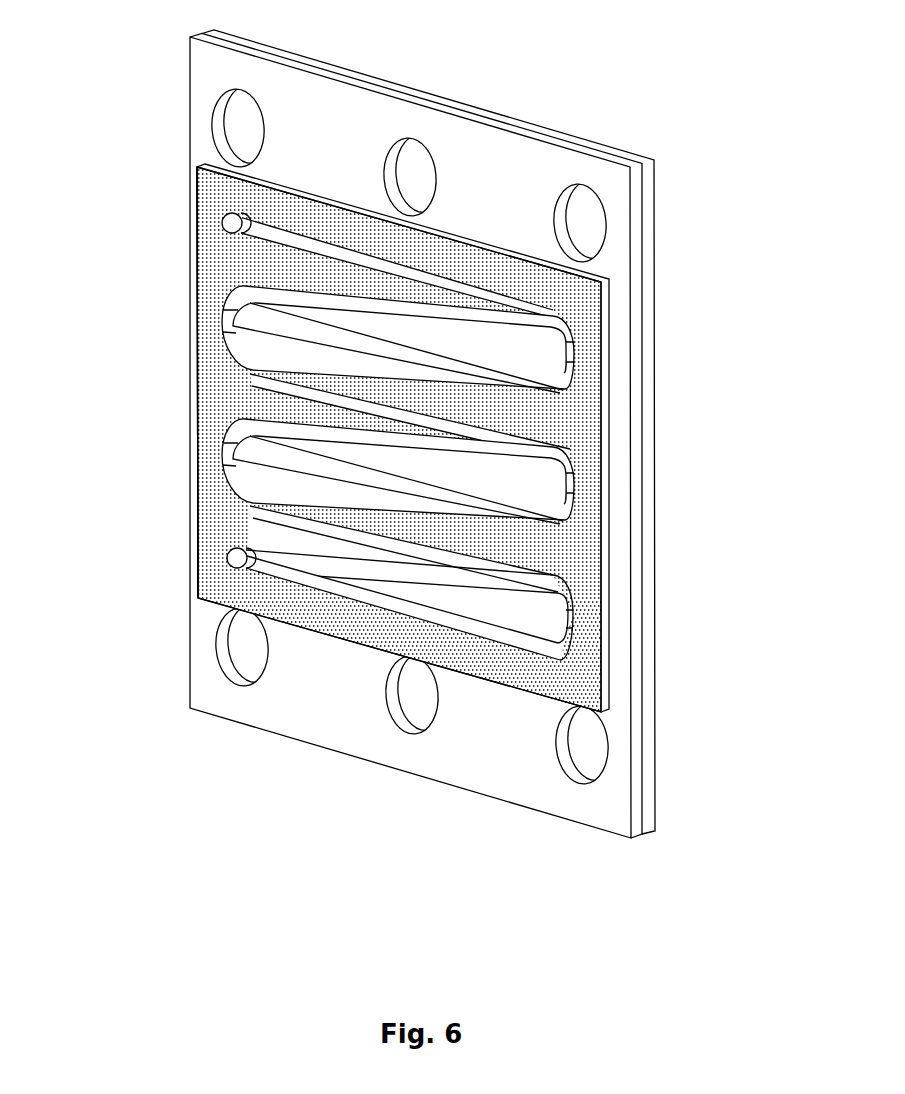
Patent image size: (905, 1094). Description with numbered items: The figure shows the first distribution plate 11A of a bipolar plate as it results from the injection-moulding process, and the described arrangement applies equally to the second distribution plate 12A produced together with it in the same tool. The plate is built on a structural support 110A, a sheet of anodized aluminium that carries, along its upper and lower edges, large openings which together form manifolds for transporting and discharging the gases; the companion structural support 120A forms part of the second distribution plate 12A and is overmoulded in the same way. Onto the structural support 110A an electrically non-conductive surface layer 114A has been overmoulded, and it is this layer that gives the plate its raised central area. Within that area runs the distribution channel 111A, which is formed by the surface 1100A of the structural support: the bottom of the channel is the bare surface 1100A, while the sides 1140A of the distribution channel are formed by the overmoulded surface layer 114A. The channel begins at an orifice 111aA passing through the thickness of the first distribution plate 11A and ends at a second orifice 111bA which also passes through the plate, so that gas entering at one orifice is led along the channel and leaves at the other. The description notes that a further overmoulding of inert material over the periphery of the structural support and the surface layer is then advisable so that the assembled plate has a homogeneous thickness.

The second distribution plate 12A is at (418, 465).
The first distribution plate 11A is at (629, 839).
The structural support 110A is at (634, 230).
The structural support 120A is at (649, 362).
The surface of the structural support 1100A is at (354, 356).
The distribution channel 111A is at (452, 283).
The orifice 111aA is at (224, 226).
The orifice 111bA is at (227, 562).
The surface layer 114A is at (204, 598).
The sides of the distribution channel 1140A is at (498, 572).